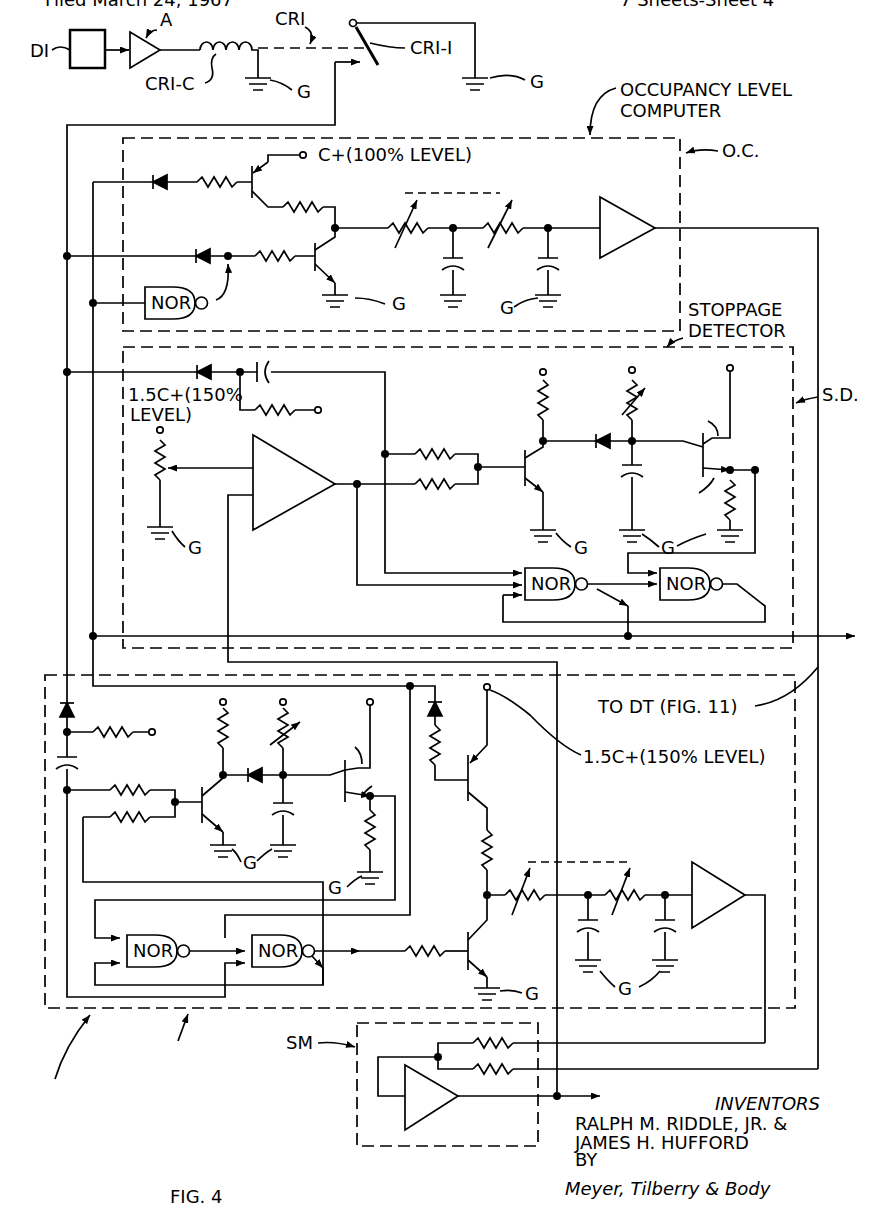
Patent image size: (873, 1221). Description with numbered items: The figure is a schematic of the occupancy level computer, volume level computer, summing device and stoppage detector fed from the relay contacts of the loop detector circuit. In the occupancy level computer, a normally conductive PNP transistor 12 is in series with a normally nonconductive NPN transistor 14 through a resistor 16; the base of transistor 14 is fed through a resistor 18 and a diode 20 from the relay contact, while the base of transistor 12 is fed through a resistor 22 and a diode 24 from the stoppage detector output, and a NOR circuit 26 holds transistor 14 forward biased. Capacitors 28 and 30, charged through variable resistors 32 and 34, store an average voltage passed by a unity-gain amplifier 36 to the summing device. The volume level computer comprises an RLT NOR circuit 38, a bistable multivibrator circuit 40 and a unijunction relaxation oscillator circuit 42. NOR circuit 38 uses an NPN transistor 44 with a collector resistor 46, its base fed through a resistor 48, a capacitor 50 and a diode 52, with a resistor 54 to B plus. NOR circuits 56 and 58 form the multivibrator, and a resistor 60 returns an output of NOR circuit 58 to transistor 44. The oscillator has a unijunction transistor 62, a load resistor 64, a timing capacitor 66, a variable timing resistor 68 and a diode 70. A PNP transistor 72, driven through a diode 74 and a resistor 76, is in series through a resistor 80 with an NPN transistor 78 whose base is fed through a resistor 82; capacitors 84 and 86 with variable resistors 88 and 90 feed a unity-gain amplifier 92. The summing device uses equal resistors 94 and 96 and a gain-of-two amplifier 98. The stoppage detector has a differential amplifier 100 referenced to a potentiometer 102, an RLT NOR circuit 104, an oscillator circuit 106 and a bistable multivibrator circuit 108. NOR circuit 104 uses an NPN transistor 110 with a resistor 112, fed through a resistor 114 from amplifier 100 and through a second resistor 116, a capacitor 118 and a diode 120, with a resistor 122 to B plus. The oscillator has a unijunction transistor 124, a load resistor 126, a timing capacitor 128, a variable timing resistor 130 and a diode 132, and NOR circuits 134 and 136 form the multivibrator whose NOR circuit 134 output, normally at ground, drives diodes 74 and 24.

The PNP transistor 12 is at (266, 184).
The NPN transistor 14 is at (315, 250).
The resistor 16 is at (318, 204).
The resistor 18 is at (258, 264).
The diode 20 is at (207, 252).
The resistor 22 is at (208, 178).
The diode 24 is at (163, 178).
The NOR circuit 26 is at (218, 311).
The capacitor 28 is at (440, 263).
The capacitor 30 is at (562, 263).
The variable resistor 32 is at (397, 244).
The second variable resistor 34 is at (498, 241).
The amplifier 36 is at (632, 215).
The RLT NOR circuit 38 is at (217, 793).
The bistable multivibrator circuit 40 is at (245, 994).
The unijunction transistor RC relaxation oscillator circuit 42 is at (279, 784).
The NPN transistor 44 is at (212, 813).
The resistor 46 is at (220, 726).
The resistor 48 is at (138, 787).
The capacitor 50 is at (80, 767).
The diode 52 is at (78, 707).
The resistor 54 is at (120, 727).
The NOR circuit 56 is at (150, 935).
The NOR circuit 58 is at (306, 966).
The resistor 60 is at (121, 824).
The unijunction transistor 62 is at (336, 766).
The load resistor 64 is at (362, 839).
The timing capacitor 66 is at (294, 811).
The variable timing resistor 68 is at (300, 723).
The diode 70 is at (265, 783).
The PNP transistor 72 is at (490, 771).
The diode 74 is at (445, 707).
The resistor 76 is at (433, 773).
The NPN transistor 78 is at (480, 953).
The series resistor 80 is at (492, 838).
The resistor 82 is at (420, 961).
The capacitor 84 is at (600, 933).
The capacitor 86 is at (678, 933).
The variable resistor 88 is at (518, 908).
The second variable resistor 90 is at (617, 908).
The amplifier 92 is at (712, 873).
The resistor 94 is at (493, 1077).
The resistor 96 is at (510, 1043).
The amplifier 98 is at (430, 1118).
The differential amplifier 100 is at (303, 511).
The potentiometer 102 is at (166, 487).
The RLT NOR circuit 104 is at (515, 452).
The unijunction transistor RC relaxation oscillator circuit 106 is at (716, 449).
The bistable multivibrator circuit 108 is at (760, 589).
The NPN transistor 110 is at (545, 489).
The resistor 112 is at (536, 414).
The resistor 114 is at (428, 491).
The second resistor 116 is at (425, 453).
The capacitor 118 is at (272, 366).
The diode 120 is at (196, 371).
The resistor 122 is at (292, 416).
The unijunction transistor 124 is at (716, 451).
The load resistor 126 is at (722, 509).
The timing capacitor 128 is at (622, 474).
The variable timing resistor 130 is at (640, 395).
The diode 132 is at (598, 434).
The NOR circuit 134 is at (545, 568).
The NOR circuit 136 is at (723, 579).